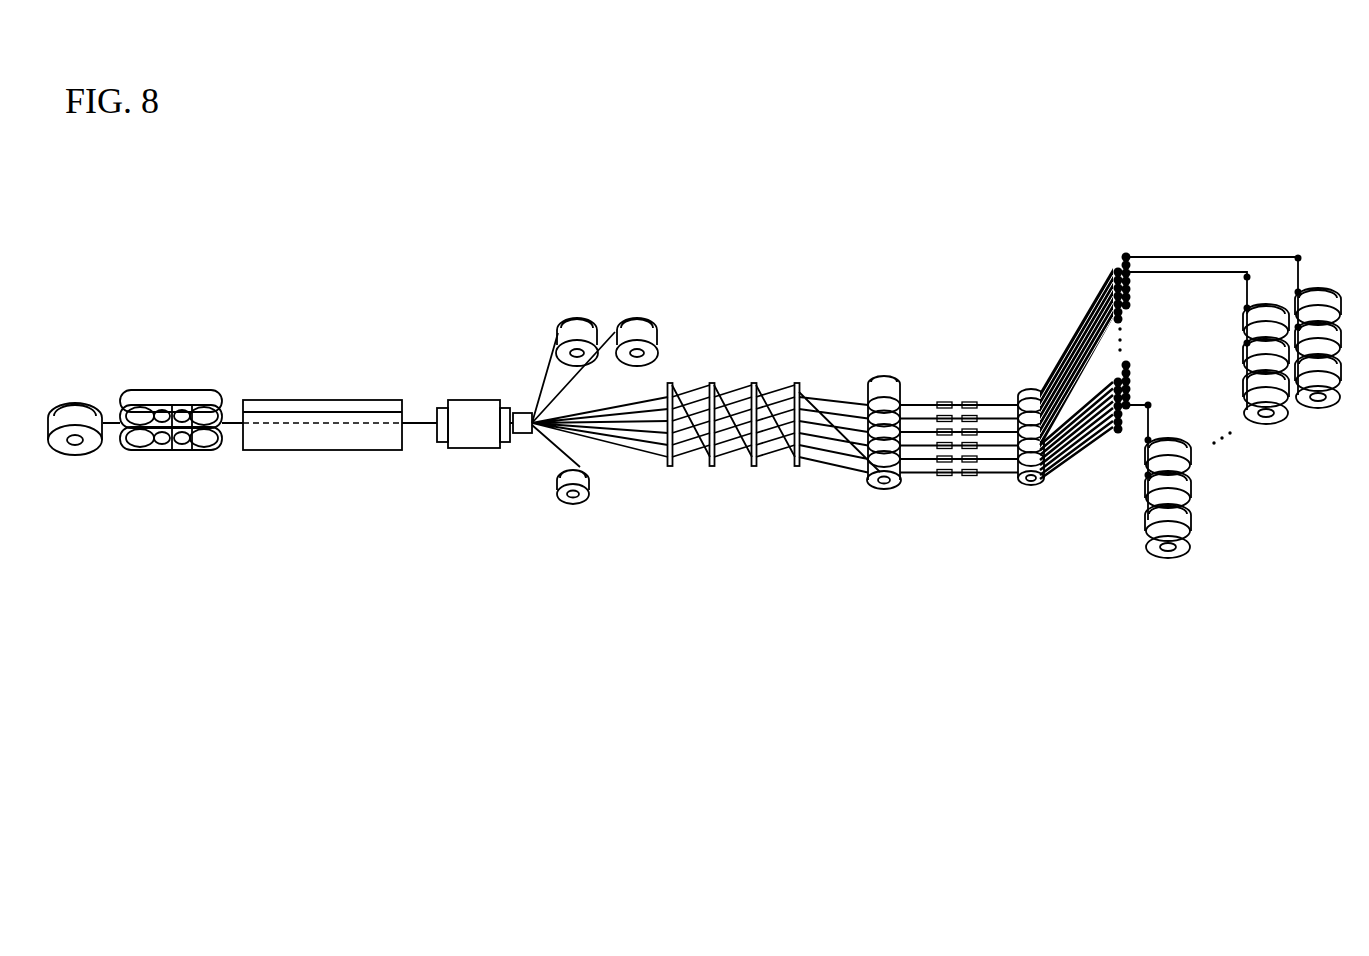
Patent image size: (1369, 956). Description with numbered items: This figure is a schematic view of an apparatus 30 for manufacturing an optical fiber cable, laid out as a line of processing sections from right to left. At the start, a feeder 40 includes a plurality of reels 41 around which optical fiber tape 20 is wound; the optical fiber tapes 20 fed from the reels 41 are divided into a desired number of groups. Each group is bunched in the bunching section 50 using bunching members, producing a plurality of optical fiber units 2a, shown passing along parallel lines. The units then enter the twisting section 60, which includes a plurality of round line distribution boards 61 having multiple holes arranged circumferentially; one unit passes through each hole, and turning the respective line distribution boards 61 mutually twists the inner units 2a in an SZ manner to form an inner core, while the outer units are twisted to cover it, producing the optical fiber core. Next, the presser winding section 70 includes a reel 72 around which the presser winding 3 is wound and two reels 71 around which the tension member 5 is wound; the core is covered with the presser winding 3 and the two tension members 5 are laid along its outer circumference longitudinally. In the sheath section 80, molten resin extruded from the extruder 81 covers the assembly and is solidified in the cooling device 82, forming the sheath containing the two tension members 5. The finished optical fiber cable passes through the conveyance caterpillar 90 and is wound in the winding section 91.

The winding section 91 is at (75, 400).
The conveyance caterpillar 90 is at (168, 452).
The sheath section 80 is at (376, 424).
The cooling device 82 is at (325, 452).
The extruder 81 is at (473, 458).
The presser winding 3 is at (560, 450).
The tension member 5 is at (574, 380).
The presser winding section 70 is at (586, 378).
The reel 71 is at (635, 317).
The reel 72 is at (578, 506).
The twisting section 60 is at (737, 411).
The line distribution board 61 is at (797, 381).
The inner unit 2a is at (912, 400).
The bunching section 50 is at (897, 507).
The apparatus 30 is at (982, 213).
The feeder 40 is at (1195, 398).
The optical fiber tape 20 is at (1250, 292).
The reel 41 is at (1143, 562).